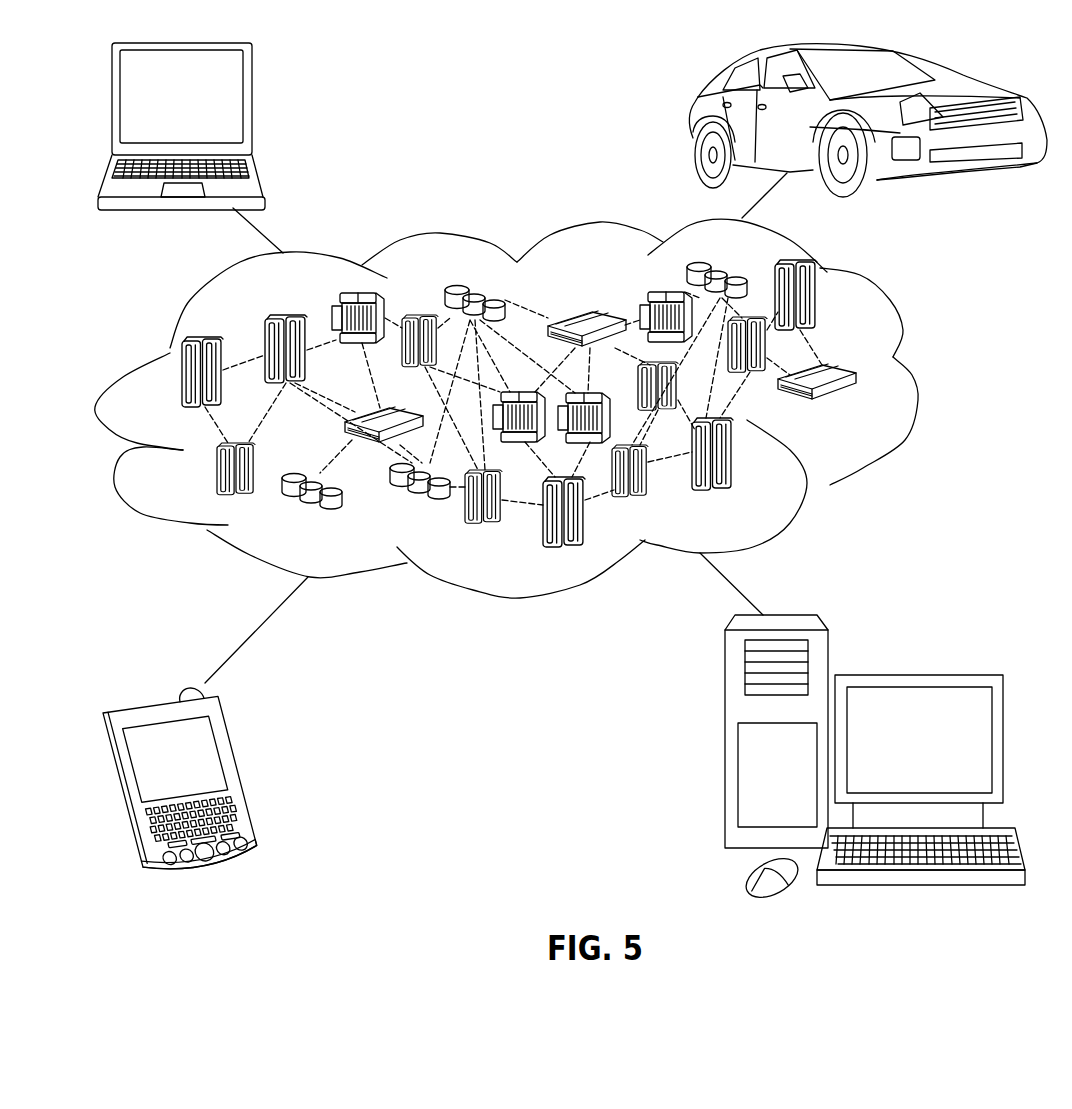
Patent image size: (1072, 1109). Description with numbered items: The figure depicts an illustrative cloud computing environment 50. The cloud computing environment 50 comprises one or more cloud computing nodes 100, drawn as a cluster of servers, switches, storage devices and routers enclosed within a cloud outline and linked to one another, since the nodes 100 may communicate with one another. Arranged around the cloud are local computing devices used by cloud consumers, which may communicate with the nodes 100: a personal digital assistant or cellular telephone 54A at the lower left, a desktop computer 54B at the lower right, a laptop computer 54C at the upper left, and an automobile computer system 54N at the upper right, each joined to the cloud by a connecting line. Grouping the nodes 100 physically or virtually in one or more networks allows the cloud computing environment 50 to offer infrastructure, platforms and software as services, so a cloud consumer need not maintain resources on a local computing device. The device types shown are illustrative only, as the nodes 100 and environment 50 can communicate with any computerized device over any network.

The cloud computing environment 50 is at (915, 381).
The cloud computing nodes 100 is at (858, 412).
The personal digital assistant (PDA) or cellular telephone 54A is at (242, 770).
The desktop computer 54B is at (917, 672).
The laptop computer 54C is at (254, 104).
The automobile computer system 54N is at (693, 125).